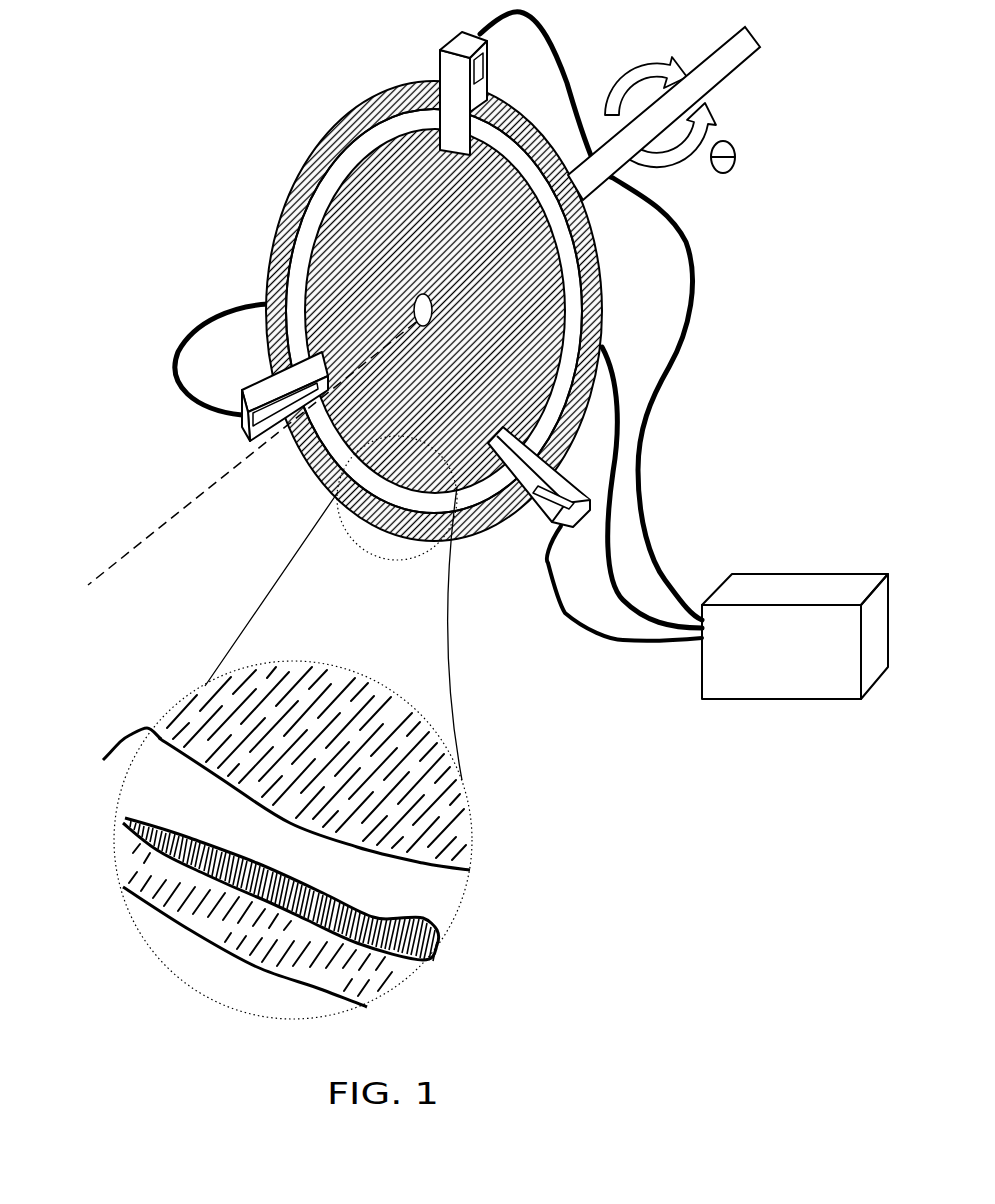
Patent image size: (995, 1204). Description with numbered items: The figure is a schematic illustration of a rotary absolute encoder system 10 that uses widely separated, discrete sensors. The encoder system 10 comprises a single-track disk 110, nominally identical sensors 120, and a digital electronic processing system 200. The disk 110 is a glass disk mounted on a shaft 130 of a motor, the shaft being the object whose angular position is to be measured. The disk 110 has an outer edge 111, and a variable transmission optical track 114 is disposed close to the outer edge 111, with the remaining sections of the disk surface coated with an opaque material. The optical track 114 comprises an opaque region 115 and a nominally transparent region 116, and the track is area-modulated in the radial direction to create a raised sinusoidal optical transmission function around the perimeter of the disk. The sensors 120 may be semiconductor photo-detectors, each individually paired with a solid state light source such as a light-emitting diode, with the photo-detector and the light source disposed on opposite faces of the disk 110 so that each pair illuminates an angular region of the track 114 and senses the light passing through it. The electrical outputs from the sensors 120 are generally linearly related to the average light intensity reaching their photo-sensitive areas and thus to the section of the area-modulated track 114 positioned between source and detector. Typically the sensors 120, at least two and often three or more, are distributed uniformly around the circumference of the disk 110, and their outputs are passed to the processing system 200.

The rotary absolute encoder system 10 is at (182, 97).
The single-track disk 110 is at (268, 245).
The outer edge 111 is at (288, 172).
The variable transmission optical track 114 is at (299, 275).
The opaque region 115 is at (440, 945).
The nominally transparent region 116 is at (433, 895).
The sensors 120 is at (440, 55).
The shaft 130 is at (730, 77).
The digital electronic processing system 200 is at (806, 671).